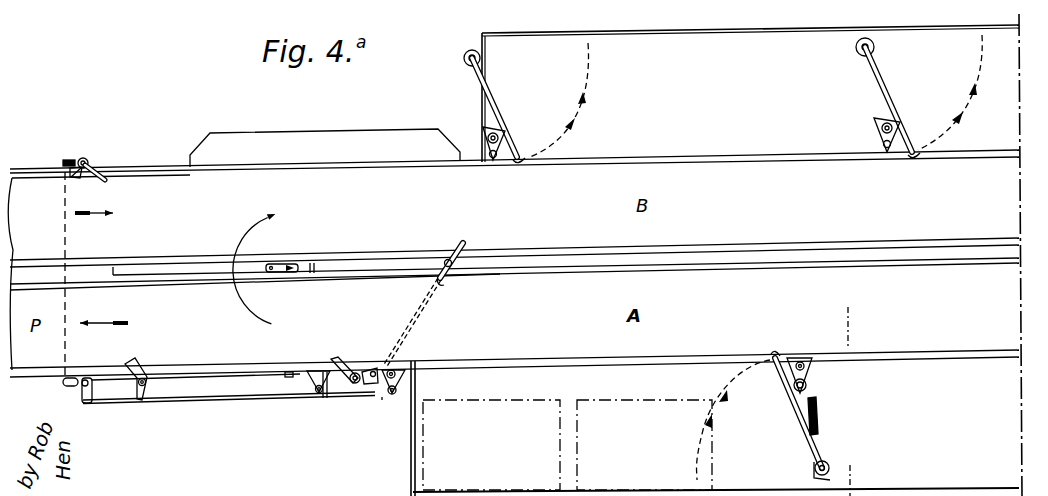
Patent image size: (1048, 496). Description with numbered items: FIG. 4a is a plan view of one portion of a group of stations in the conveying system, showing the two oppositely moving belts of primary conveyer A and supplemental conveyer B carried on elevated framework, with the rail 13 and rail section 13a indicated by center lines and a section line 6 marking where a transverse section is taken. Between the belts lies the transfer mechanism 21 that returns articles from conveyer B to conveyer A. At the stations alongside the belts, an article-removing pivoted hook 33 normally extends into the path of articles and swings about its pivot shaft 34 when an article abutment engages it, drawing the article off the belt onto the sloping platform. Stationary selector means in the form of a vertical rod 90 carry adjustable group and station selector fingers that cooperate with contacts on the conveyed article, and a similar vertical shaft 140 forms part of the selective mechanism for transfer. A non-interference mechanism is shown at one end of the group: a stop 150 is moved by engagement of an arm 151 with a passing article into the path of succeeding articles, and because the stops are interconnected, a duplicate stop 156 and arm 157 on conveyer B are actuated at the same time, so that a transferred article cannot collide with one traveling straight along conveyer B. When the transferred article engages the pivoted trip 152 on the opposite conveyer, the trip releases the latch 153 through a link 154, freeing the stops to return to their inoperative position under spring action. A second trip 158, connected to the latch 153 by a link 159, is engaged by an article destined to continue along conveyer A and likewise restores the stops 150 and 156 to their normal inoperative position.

The section line 6 is at (853, 318).
The rail 13 is at (223, 300).
The rail section 13a is at (318, 297).
The transfer mechanism 21 is at (280, 262).
The pivoted hook 33 is at (797, 413).
The pivot shaft 34 is at (828, 466).
The vertical rod 90 is at (488, 137).
The vertical shaft 140 is at (325, 400).
The stop 150 is at (374, 367).
The arm 151 is at (348, 358).
The pivoted trip 152 is at (453, 244).
The latch 153 is at (383, 397).
The link 154 is at (420, 316).
The stop 156 is at (70, 160).
The arm 157 is at (97, 166).
The second trip 158 is at (138, 362).
The link 159 is at (213, 393).